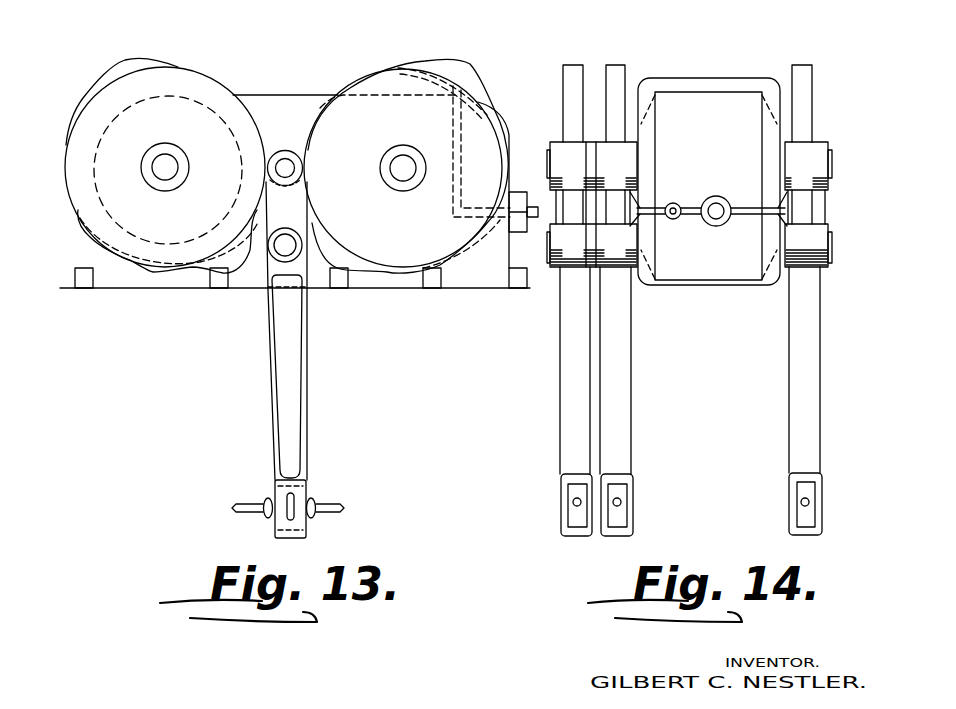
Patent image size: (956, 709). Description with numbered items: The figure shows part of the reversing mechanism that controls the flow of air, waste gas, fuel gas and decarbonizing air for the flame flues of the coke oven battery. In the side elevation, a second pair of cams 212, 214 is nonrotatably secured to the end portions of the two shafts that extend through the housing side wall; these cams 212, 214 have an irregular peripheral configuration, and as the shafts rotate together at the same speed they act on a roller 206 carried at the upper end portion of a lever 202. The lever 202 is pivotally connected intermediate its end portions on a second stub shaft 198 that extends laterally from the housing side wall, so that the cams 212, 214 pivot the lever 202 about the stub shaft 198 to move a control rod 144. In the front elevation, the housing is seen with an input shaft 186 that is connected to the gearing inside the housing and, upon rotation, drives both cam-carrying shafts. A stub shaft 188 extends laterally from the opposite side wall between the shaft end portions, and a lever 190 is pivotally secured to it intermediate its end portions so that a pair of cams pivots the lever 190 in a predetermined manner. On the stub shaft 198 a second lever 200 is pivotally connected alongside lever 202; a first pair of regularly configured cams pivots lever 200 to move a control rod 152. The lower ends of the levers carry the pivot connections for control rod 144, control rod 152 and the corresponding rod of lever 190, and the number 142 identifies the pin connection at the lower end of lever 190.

In FIG. 13, the cam 214 is at (250, 172).
In FIG. 13, the cam 212 is at (365, 174).
In FIG. 13, the roller 206 is at (283, 150).
In FIG. 13, the second stub shaft 198 is at (322, 302).
In FIG. 14, the second stub shaft 198 is at (549, 250).
In FIG. 13, the lever 202 is at (307, 388).
In FIG. 14, the lever 202 is at (570, 414).
In FIG. 13, the control rod 144 is at (326, 507).
In FIG. 14, the control rod 144 is at (574, 503).
In FIG. 13, the input shaft 186 is at (535, 206).
In FIG. 14, the stub shaft 188 is at (832, 248).
In FIG. 14, the lever 200 is at (622, 396).
In FIG. 14, the lever 190 is at (800, 359).
In FIG. 14, the control rod 152 is at (620, 503).
In FIG. 14, the pivot pin 142 is at (804, 504).